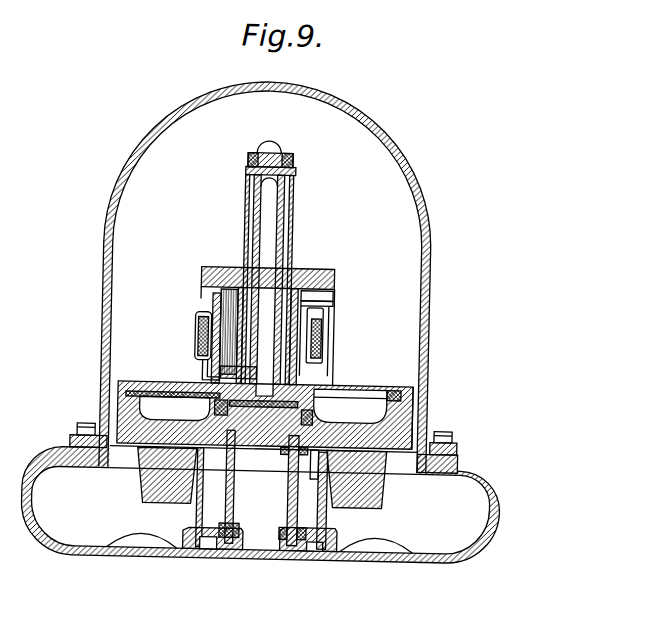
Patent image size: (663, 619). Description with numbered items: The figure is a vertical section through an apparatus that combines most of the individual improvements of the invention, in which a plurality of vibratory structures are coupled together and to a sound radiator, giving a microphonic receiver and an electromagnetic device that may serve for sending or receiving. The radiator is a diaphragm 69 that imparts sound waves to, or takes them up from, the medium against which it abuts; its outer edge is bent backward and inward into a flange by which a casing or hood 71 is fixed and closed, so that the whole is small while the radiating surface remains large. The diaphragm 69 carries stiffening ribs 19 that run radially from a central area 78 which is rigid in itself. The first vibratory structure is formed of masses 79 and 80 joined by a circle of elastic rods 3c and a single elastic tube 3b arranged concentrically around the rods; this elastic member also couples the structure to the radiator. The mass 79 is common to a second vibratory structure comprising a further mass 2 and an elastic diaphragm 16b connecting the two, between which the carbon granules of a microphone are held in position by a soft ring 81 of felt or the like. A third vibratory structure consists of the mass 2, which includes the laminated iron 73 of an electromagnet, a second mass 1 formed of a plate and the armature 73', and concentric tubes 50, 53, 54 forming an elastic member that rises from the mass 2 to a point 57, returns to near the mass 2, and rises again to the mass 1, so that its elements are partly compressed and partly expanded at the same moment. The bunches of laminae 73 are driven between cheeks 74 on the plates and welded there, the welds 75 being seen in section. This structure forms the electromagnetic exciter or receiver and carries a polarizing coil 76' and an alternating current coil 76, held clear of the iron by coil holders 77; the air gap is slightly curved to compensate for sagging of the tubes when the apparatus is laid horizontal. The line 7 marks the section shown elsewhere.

The mass 1 is at (312, 274).
The mass 2 is at (337, 382).
The elastic tube 3b is at (314, 476).
The elastic rods 3c is at (295, 514).
The section line 7 is at (237, 300).
The elastic diaphragm 16b is at (375, 386).
The stiffening ribs 19 is at (157, 542).
The concentric tube 50 is at (251, 208).
The concentric tube 53 is at (288, 210).
The concentric tube 54 is at (326, 328).
The reversal point 57 is at (292, 162).
The diaphragm 69 is at (483, 535).
The hood 71 is at (431, 238).
The laminated iron 73 is at (344, 340).
The armature 73' is at (340, 333).
The cheeks 74 is at (224, 379).
The welds 75 is at (333, 292).
The alternating current coil 76 is at (199, 331).
The polarizing coil 76' is at (183, 336).
The coil holders 77 is at (214, 364).
The central area 78 is at (239, 559).
The mass 79 is at (412, 415).
The mass 80 is at (379, 498).
The soft ring 81 is at (218, 409).